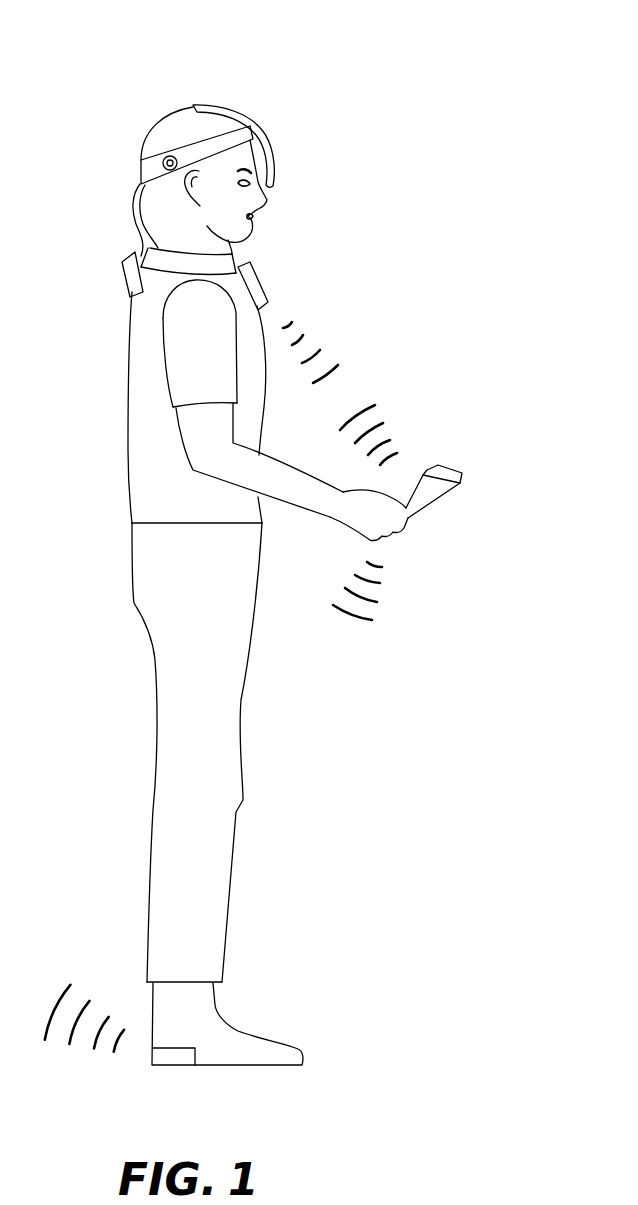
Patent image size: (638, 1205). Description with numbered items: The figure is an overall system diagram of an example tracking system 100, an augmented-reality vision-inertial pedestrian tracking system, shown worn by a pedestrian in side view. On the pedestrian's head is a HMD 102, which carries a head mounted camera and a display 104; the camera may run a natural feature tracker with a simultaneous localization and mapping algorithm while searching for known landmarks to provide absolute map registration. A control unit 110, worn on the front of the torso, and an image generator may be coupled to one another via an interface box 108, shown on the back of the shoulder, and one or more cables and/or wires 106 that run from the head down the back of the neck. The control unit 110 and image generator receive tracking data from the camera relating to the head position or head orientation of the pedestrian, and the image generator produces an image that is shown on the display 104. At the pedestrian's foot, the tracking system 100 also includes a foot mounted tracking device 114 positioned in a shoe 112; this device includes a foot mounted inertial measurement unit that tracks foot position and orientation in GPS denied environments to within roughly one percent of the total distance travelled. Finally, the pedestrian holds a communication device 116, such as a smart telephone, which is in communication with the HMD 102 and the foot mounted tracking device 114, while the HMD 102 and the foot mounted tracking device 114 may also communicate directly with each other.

The tracking system 100 is at (472, 78).
The HMD 102 is at (140, 153).
The display 104 is at (253, 133).
The cables and/or wires 106 is at (137, 203).
The interface box 108 is at (122, 287).
The control unit 110 is at (252, 290).
The shoe 112 is at (217, 1008).
The foot mounted tracking device 114 is at (163, 1058).
The communication device 116 is at (467, 480).